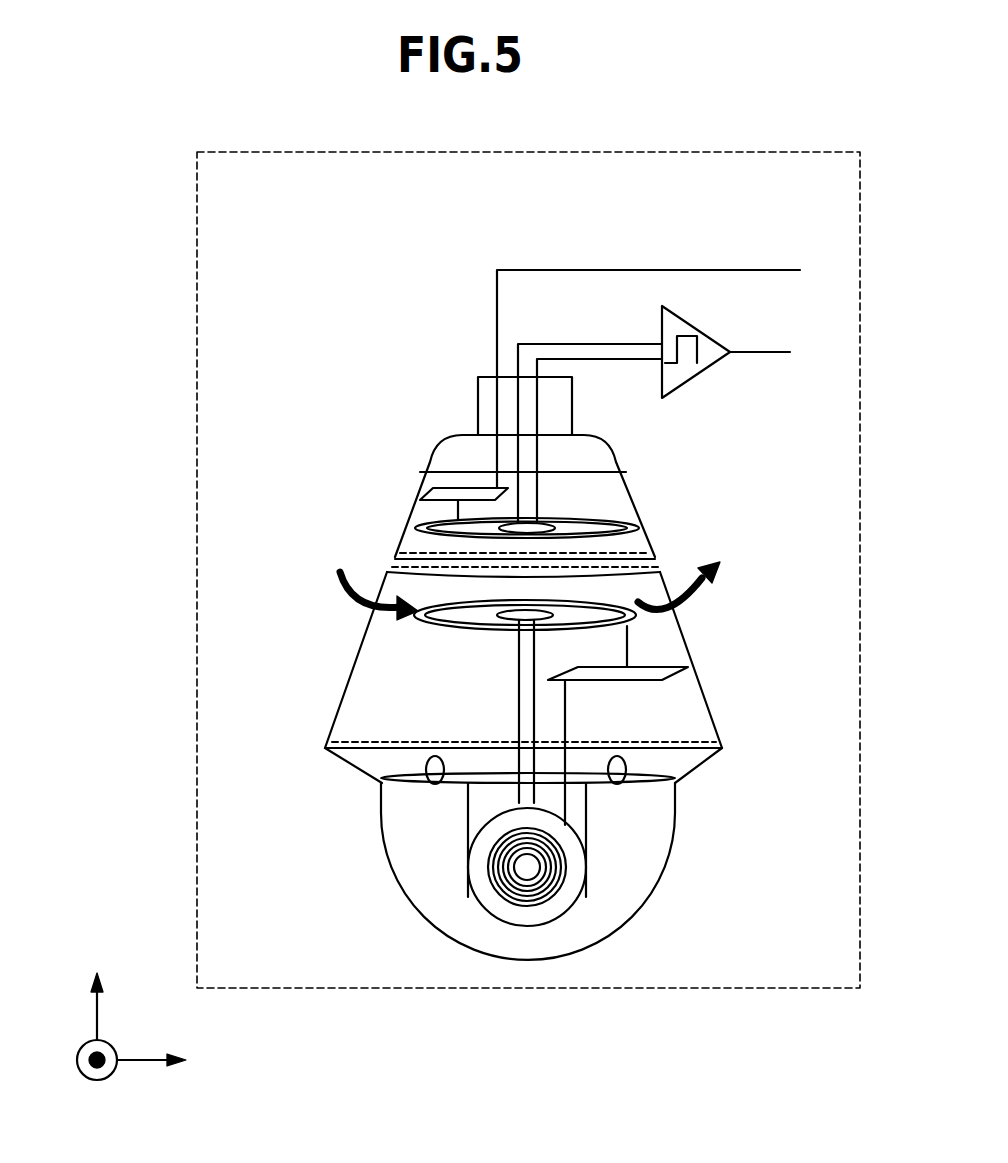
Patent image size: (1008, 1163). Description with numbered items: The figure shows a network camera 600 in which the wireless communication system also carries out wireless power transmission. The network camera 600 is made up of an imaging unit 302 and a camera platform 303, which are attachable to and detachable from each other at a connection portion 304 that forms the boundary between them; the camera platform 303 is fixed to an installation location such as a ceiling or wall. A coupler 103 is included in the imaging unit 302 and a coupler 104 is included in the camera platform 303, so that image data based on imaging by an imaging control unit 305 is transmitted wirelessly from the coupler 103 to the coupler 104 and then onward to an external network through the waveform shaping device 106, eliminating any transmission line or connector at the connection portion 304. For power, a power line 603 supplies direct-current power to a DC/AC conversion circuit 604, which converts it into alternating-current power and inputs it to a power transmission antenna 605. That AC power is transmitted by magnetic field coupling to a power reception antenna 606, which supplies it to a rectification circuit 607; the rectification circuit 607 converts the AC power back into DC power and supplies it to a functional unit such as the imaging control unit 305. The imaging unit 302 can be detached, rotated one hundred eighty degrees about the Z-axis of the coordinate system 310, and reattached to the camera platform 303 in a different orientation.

The network camera 600 is at (777, 151).
The power line 603 is at (582, 270).
The waveform shaping device 106 is at (708, 337).
The camera platform 303 is at (458, 434).
The DC/AC conversion circuit 604 is at (448, 487).
The coupler 104 is at (430, 519).
The power transmission antenna 605 is at (593, 517).
The connection portion 304 is at (390, 563).
The imaging unit 302 is at (667, 627).
The coupler 103 is at (437, 625).
The power reception antenna 606 is at (472, 632).
The rectification circuit 607 is at (663, 677).
The imaging control unit 305 is at (467, 882).
The coordinate system 310 is at (97, 940).